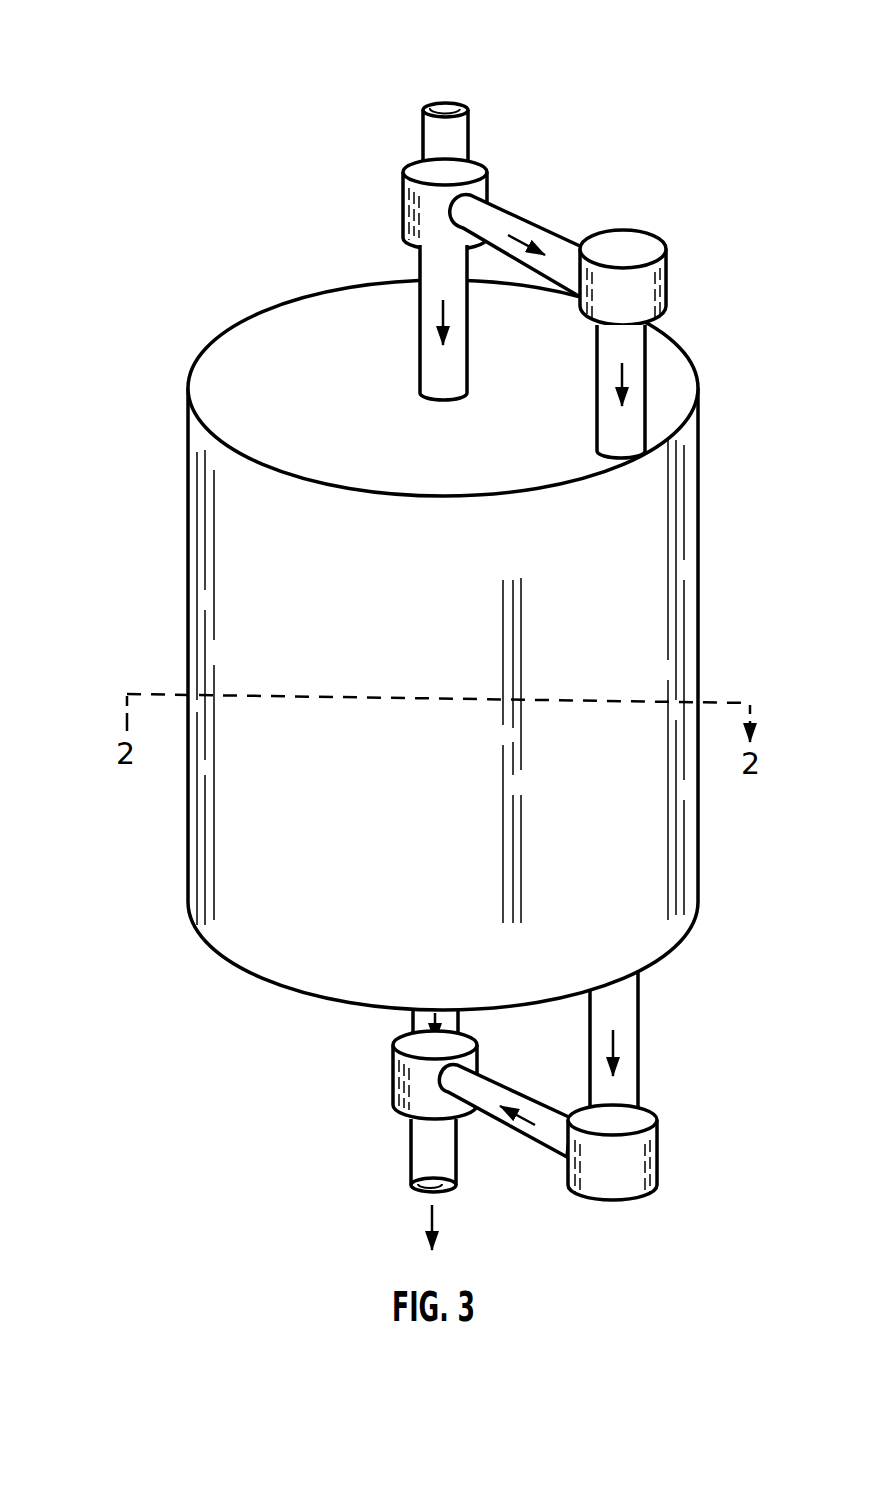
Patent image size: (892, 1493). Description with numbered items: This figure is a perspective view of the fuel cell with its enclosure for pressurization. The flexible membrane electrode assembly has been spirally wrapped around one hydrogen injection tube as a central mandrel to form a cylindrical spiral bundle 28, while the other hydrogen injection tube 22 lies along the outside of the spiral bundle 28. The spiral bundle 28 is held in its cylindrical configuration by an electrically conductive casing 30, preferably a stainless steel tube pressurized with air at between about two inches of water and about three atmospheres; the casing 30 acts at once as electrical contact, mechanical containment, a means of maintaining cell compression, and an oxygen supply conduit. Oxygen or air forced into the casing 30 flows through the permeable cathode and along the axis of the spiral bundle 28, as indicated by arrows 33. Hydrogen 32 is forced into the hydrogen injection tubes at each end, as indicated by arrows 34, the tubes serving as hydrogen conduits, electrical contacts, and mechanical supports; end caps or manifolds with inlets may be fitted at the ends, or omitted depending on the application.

The hydrogen injection tube 22 is at (430, 1017).
The spiral bundle 28 is at (427, 629).
The casing 30 is at (695, 648).
The hydrogen 32 is at (446, 82).
The arrows 33 is at (271, 350).
The arrows 34 is at (440, 312).